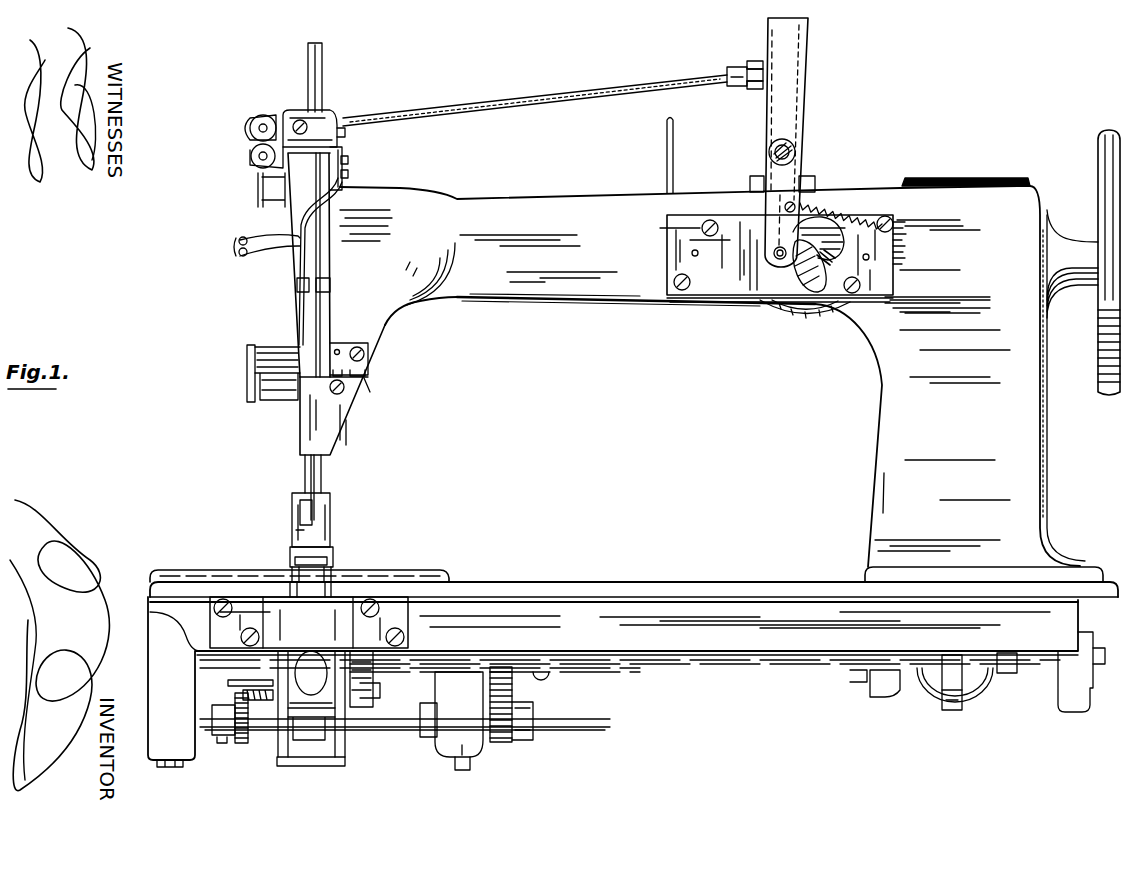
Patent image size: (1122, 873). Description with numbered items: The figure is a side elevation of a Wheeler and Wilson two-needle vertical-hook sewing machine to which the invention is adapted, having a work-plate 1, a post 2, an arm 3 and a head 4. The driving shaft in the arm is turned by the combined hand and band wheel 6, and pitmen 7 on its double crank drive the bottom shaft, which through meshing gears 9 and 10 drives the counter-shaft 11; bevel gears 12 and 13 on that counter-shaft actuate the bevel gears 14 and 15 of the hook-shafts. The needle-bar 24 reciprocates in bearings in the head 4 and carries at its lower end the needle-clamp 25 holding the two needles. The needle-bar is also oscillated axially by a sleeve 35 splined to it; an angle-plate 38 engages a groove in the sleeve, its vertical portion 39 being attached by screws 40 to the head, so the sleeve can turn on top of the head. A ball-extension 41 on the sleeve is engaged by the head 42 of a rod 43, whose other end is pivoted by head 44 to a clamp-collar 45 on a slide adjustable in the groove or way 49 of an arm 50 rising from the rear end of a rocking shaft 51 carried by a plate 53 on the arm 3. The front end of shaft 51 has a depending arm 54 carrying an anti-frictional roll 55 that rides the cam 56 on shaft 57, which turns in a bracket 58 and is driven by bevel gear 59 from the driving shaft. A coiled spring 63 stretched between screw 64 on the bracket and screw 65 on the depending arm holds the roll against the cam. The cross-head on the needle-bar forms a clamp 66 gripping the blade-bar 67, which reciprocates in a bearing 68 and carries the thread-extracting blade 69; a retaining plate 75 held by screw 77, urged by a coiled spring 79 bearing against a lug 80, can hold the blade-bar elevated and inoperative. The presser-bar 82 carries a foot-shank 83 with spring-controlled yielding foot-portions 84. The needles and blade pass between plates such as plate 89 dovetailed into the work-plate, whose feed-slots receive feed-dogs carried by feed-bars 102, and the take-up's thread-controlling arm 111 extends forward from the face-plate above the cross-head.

The work-plate 1 is at (651, 590).
The post 2 is at (884, 414).
The arm 3 is at (590, 294).
The head 4 is at (386, 331).
The combined hand and band wheel 6 is at (1096, 154).
The pitmen 7 is at (946, 706).
The meshing-gear 9 is at (514, 693).
The meshing-gear 10 is at (497, 742).
The counter-shaft 11 is at (396, 731).
The bevel gear 12 is at (317, 745).
The bevel gear 13 is at (241, 744).
The bevel-gear of hook-shaft 14 is at (373, 692).
The bevel-gear of hook-shaft 15 is at (248, 689).
The needle-bar 24 is at (322, 56).
The needle-clamp 25 is at (306, 460).
The sleeve 35 is at (346, 137).
The angle-plate 38 is at (345, 147).
The vertical portion of angle-plate 39 is at (335, 165).
The screws 40 is at (349, 176).
The ball-extension 41 is at (300, 119).
The head of rod 42 is at (320, 115).
The rod 43 is at (482, 102).
The head of rod 44 is at (734, 68).
The clamp-collar 45 is at (751, 90).
The groove or way 49 is at (805, 53).
The arm 50 is at (803, 104).
The shaft 51 is at (796, 151).
The plate 53 is at (754, 177).
The depending-arm 54 is at (790, 187).
The anti-frictional roll 55 is at (774, 258).
The cam 56 is at (792, 232).
The shaft 57 is at (798, 262).
The bracket 58 is at (893, 277).
The bevel-gear 59 is at (826, 313).
The coiled-spring 63 is at (858, 227).
The screw 64 is at (893, 225).
The screw 65 is at (784, 207).
The clamp 66 is at (331, 288).
The blade-bar 67 is at (310, 310).
The bearing 68 is at (332, 440).
The thread-extracting blade 69 is at (317, 480).
The plate 75 is at (368, 386).
The screw 77 is at (331, 378).
The coiled-spring 79 is at (362, 379).
The lug 80 is at (369, 372).
The presser-bar 82 is at (306, 507).
The foot-shank 83 is at (330, 522).
The yielding foot-portions 84 is at (334, 560).
The plate 89 is at (442, 572).
The feed-bars 102 is at (325, 592).
The thread-controlling arm 111 is at (240, 254).